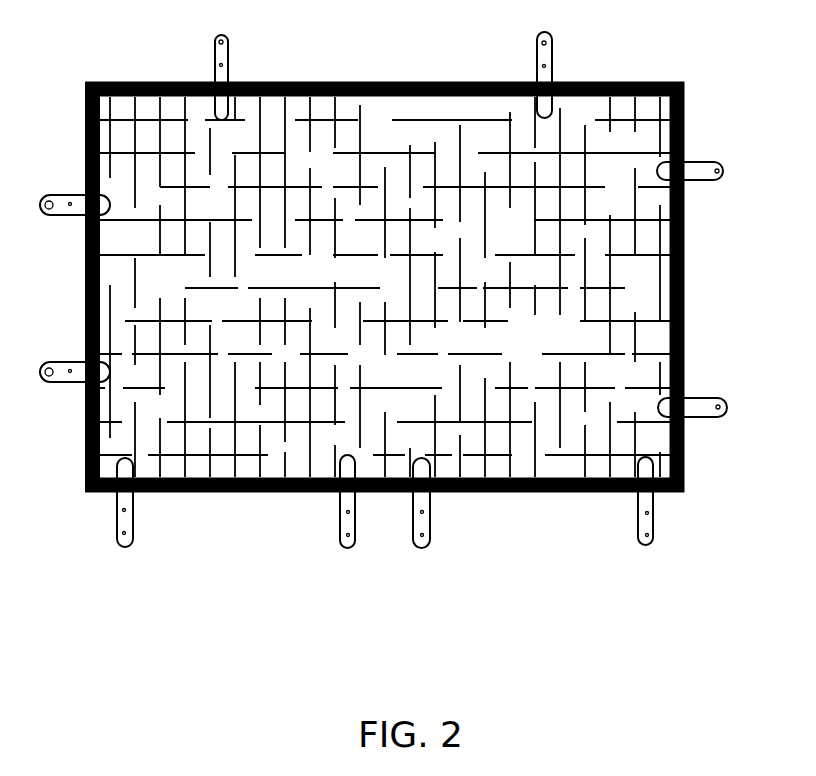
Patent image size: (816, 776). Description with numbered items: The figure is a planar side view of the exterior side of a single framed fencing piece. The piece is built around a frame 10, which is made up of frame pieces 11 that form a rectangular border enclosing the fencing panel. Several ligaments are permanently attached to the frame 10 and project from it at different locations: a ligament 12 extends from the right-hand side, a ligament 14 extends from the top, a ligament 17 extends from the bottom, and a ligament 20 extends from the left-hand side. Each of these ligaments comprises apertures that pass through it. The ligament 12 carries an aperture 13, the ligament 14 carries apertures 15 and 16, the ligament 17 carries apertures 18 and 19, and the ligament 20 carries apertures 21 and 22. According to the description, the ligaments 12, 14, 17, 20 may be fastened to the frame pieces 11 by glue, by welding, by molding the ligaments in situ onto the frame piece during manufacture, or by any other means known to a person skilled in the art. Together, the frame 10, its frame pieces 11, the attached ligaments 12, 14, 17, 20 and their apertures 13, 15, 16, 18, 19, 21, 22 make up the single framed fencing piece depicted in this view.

The frame 10 is at (686, 246).
The frame pieces 11 is at (636, 345).
The ligament 12 is at (704, 160).
The aperture 13 is at (722, 170).
The ligament 14 is at (232, 62).
The aperture 15 is at (219, 40).
The aperture 16 is at (219, 66).
The ligament 17 is at (135, 525).
The aperture 18 is at (121, 534).
The aperture 19 is at (122, 512).
The ligament 20 is at (65, 216).
The aperture 21 is at (46, 202).
The aperture 22 is at (70, 201).